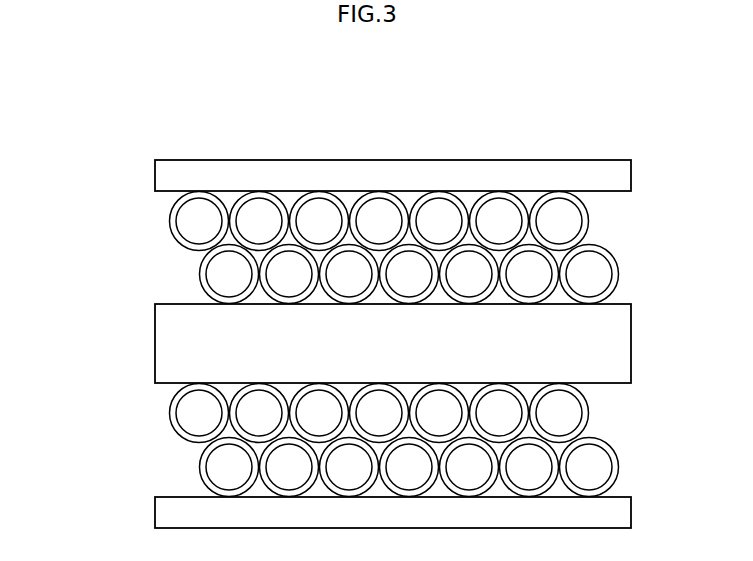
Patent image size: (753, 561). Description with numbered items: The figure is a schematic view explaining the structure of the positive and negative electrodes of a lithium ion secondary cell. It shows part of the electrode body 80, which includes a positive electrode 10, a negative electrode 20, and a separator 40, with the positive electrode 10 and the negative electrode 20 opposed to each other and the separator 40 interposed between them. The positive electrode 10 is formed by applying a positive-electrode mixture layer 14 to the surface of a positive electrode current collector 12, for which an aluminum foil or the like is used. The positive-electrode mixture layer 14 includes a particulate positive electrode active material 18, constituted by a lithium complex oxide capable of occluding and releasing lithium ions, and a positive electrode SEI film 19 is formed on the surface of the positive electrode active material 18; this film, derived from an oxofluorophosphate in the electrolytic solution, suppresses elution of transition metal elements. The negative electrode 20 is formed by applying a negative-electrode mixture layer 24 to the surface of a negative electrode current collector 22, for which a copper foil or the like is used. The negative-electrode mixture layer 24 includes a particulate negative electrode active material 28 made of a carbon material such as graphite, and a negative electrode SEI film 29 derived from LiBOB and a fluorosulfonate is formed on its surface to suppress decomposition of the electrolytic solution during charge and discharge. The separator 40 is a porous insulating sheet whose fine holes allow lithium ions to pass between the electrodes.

The electrode body 80 is at (674, 109).
The positive electrode 10 is at (85, 162).
The positive electrode current collector 12 is at (155, 183).
The positive-electrode mixture layer 14 is at (145, 202).
The positive electrode SEI film 19 is at (590, 217).
The positive electrode active material 18 is at (597, 268).
The separator 40 is at (155, 348).
The negative electrode 20 is at (85, 423).
The negative-electrode mixture layer 24 is at (145, 392).
The negative electrode SEI film 29 is at (590, 407).
The negative electrode active material 28 is at (597, 456).
The negative electrode current collector 22 is at (155, 512).